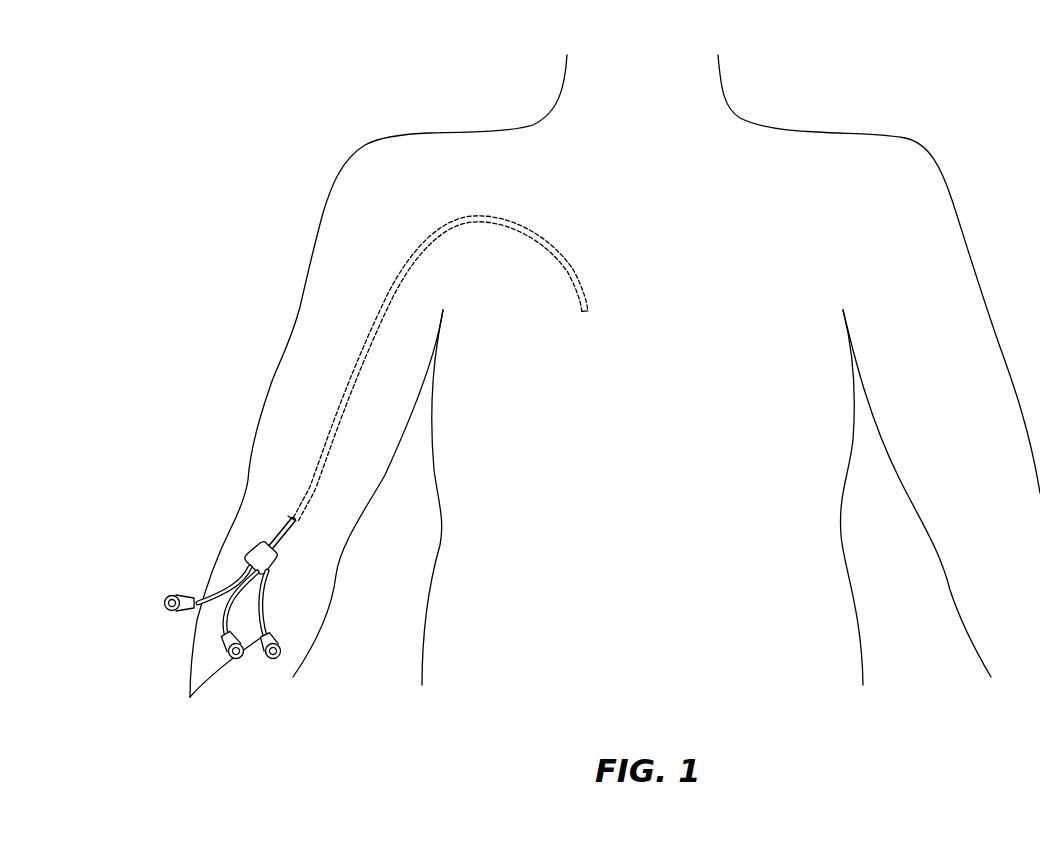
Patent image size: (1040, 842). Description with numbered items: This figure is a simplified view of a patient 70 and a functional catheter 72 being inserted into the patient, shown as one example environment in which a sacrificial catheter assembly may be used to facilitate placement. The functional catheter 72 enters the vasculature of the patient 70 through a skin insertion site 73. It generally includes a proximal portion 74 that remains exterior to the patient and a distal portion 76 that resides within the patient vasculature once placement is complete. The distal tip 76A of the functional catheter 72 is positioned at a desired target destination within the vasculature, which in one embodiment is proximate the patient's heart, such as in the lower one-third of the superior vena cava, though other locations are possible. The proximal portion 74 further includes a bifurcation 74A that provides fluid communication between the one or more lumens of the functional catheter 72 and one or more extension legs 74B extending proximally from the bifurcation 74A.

The patient 70 is at (427, 130).
The functional catheter 72 is at (268, 518).
The skin insertion site 73 is at (292, 517).
The proximal portion 74 is at (225, 571).
The bifurcation 74A is at (277, 568).
The extension legs 74B is at (208, 604).
The distal portion 76 is at (535, 255).
The distal tip 76A is at (590, 307).